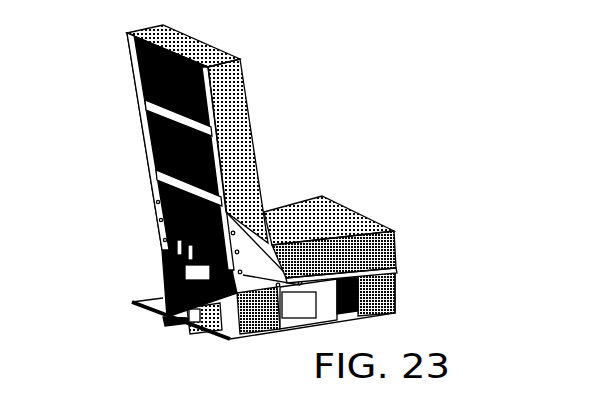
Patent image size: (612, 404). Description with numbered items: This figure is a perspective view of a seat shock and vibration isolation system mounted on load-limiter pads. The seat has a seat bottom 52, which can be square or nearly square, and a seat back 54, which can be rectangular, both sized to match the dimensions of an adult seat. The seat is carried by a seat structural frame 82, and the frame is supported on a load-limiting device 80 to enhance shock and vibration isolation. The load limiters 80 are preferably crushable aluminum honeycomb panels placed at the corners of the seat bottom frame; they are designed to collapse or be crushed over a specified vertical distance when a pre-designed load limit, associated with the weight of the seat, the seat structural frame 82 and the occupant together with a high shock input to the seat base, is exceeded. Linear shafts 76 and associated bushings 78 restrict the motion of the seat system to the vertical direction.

The seat bottom 52 is at (325, 223).
The seat back 54 is at (253, 165).
The linear shafts 76 is at (194, 283).
The bushings 78 is at (170, 269).
The load-limiting device 80 is at (153, 287).
The seat structural frame 82 is at (143, 137).